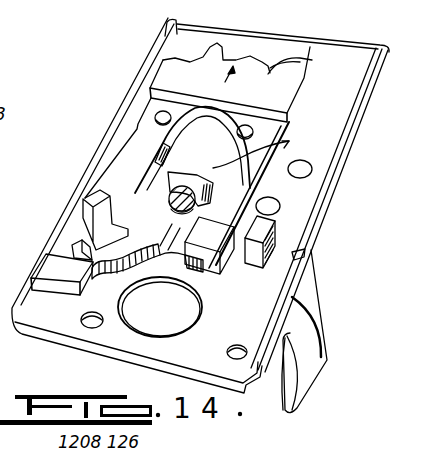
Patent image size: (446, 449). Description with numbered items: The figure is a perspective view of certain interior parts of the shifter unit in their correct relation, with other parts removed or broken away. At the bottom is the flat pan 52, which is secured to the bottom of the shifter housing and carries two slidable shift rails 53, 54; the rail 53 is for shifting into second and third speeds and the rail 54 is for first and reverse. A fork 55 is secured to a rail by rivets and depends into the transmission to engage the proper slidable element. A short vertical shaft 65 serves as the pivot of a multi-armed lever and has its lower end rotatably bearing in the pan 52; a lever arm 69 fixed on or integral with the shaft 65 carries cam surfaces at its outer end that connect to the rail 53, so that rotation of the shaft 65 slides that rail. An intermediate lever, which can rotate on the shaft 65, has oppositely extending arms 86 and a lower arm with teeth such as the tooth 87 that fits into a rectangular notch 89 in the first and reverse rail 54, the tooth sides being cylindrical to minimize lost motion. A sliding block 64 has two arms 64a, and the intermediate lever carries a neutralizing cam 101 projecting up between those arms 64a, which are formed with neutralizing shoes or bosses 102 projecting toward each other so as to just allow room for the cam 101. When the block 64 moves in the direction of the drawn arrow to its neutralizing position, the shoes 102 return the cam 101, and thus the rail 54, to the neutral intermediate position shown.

The flat pan 52 is at (58, 327).
The shift rail 53 is at (344, 123).
The shift rail 54 is at (127, 116).
The fork 55 is at (307, 297).
The sliding block 64 is at (273, 53).
The arms of the sliding block 64a is at (125, 172).
The vertical shaft 65 is at (243, 256).
The lever arm 69 is at (253, 237).
The intermediate lever arms 86 is at (152, 247).
The tooth 87 is at (77, 254).
The rectangular notch 89 is at (81, 241).
The neutralizing cam 101 is at (269, 154).
The neutralizing shoes 102 is at (165, 207).